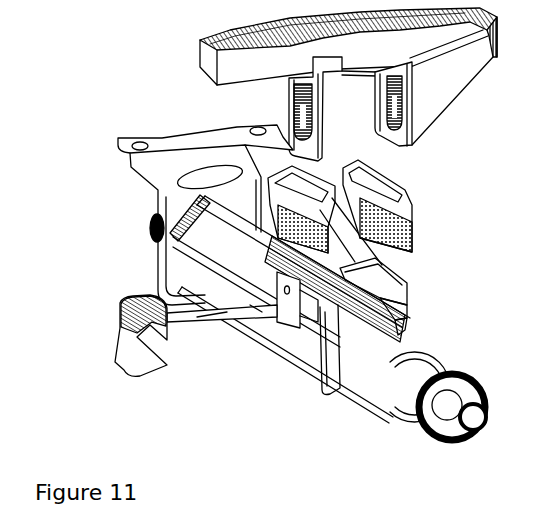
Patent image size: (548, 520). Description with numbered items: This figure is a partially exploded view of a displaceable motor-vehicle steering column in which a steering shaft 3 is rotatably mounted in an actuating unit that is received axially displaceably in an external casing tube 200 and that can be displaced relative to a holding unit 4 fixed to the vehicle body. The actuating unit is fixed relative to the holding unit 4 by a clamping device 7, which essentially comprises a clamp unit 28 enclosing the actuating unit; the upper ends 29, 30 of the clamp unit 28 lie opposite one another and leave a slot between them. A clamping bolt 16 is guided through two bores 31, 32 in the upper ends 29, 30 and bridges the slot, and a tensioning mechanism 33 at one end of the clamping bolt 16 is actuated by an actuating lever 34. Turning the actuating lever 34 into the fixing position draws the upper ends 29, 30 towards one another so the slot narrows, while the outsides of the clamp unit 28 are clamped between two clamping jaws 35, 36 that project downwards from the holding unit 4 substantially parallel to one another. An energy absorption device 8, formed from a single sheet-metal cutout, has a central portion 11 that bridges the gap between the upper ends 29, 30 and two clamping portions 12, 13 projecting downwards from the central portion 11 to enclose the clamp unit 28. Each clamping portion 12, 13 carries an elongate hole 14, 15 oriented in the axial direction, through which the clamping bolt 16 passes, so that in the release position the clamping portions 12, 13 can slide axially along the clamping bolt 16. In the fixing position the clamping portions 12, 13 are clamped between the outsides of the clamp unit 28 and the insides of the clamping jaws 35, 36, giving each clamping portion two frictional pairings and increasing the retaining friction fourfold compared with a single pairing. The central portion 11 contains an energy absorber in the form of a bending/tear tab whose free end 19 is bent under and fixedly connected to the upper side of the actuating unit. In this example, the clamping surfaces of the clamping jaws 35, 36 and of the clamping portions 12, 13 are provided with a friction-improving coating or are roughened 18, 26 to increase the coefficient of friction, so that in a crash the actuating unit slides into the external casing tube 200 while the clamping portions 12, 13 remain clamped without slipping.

The steering shaft 3 is at (428, 423).
The holding unit 4 is at (233, 70).
The clamping device 7 is at (107, 303).
The energy absorption device 8 is at (403, 180).
The central portion 11 is at (250, 136).
The clamping portion 12 is at (290, 212).
The clamping portion 13 is at (400, 218).
The elongate hole 14 is at (420, 224).
The elongate hole 15 is at (198, 153).
The clamping bolt 16 is at (197, 317).
The roughened clamping surface 18 is at (295, 230).
The free end 19 is at (385, 268).
The roughened clamping surface 26 is at (290, 110).
The clamp unit 28 is at (320, 357).
The upper end 29 is at (318, 318).
The upper end 30 is at (375, 287).
The bore 31 is at (296, 302).
The bore 32 is at (405, 318).
The tensioning mechanism 33 is at (170, 355).
The actuating lever 34 is at (137, 360).
The clamping jaw 35 is at (320, 117).
The clamping jaw 36 is at (410, 117).
The external casing tube 200 is at (257, 315).